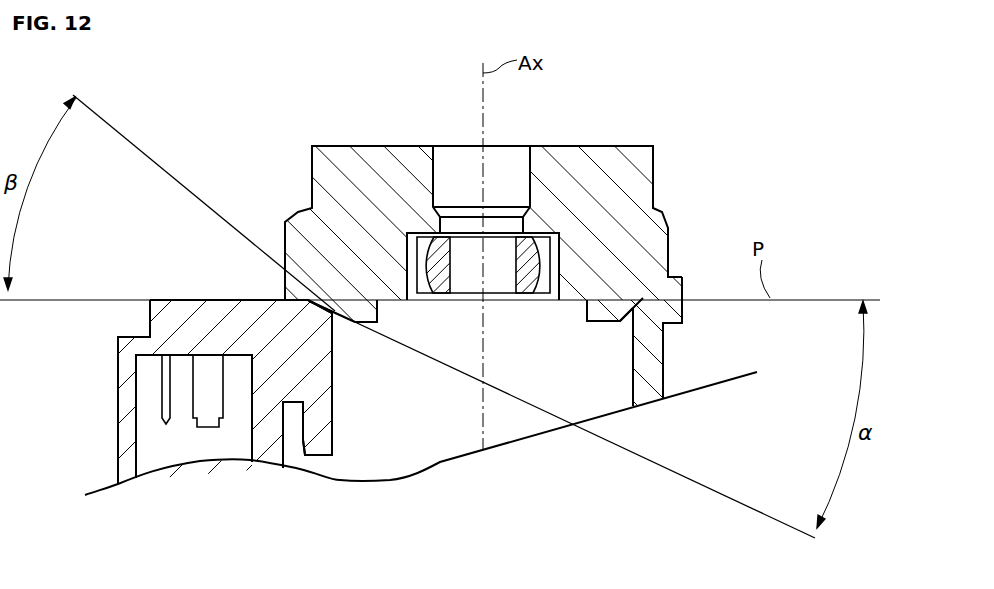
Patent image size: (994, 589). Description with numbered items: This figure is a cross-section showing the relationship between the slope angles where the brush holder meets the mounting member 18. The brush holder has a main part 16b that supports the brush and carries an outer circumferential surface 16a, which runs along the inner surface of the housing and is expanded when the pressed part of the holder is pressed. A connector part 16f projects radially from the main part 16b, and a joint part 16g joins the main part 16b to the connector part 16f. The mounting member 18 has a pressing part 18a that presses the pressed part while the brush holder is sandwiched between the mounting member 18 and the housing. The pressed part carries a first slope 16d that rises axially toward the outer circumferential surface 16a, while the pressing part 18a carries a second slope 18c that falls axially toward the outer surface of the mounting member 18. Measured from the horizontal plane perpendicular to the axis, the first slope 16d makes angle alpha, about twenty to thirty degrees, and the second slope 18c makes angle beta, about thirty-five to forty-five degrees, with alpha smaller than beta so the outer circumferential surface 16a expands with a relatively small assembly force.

The outer circumferential surface 16a is at (663, 372).
The main part 16b is at (333, 387).
The first slope 16d is at (320, 308).
The connector part 16f is at (122, 412).
The joint part 16g is at (294, 357).
The mounting member 18 is at (573, 162).
The pressing part 18a is at (363, 310).
The second slope 18c is at (340, 327).